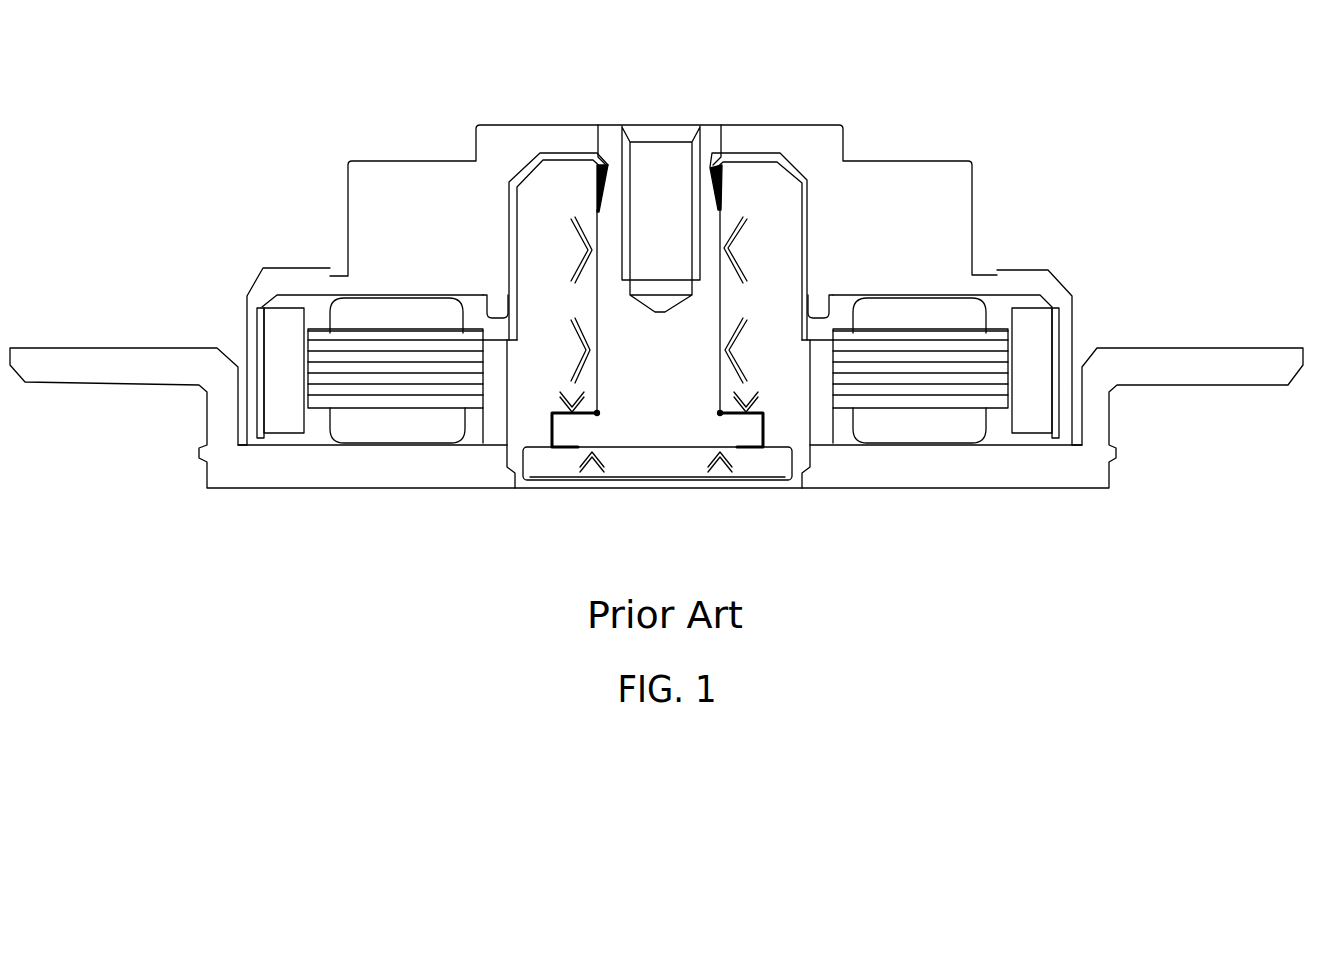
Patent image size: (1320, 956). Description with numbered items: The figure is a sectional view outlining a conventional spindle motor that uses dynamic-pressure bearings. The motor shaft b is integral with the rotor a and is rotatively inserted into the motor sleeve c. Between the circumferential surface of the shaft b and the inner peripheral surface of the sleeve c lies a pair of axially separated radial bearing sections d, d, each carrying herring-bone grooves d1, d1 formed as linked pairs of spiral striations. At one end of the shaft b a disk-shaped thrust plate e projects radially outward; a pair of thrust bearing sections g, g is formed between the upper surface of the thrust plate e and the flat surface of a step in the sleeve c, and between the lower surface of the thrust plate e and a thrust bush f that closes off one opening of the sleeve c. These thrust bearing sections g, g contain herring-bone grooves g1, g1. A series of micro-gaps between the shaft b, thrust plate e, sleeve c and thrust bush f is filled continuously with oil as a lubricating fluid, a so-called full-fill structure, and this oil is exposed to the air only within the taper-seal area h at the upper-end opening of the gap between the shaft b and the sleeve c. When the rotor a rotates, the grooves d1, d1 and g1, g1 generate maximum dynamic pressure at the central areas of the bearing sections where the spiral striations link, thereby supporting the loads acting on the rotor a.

The rotor a is at (830, 142).
The motor shaft b is at (705, 145).
The motor sleeve c is at (767, 193).
The radial bearing section d is at (725, 350).
The herring-bone grooves d1 is at (583, 330).
The thrust plate e is at (563, 432).
The thrust bush f is at (662, 467).
The thrust bearing section g is at (660, 443).
The herring-bone grooves g1 is at (762, 418).
The taper-seal area h is at (600, 178).